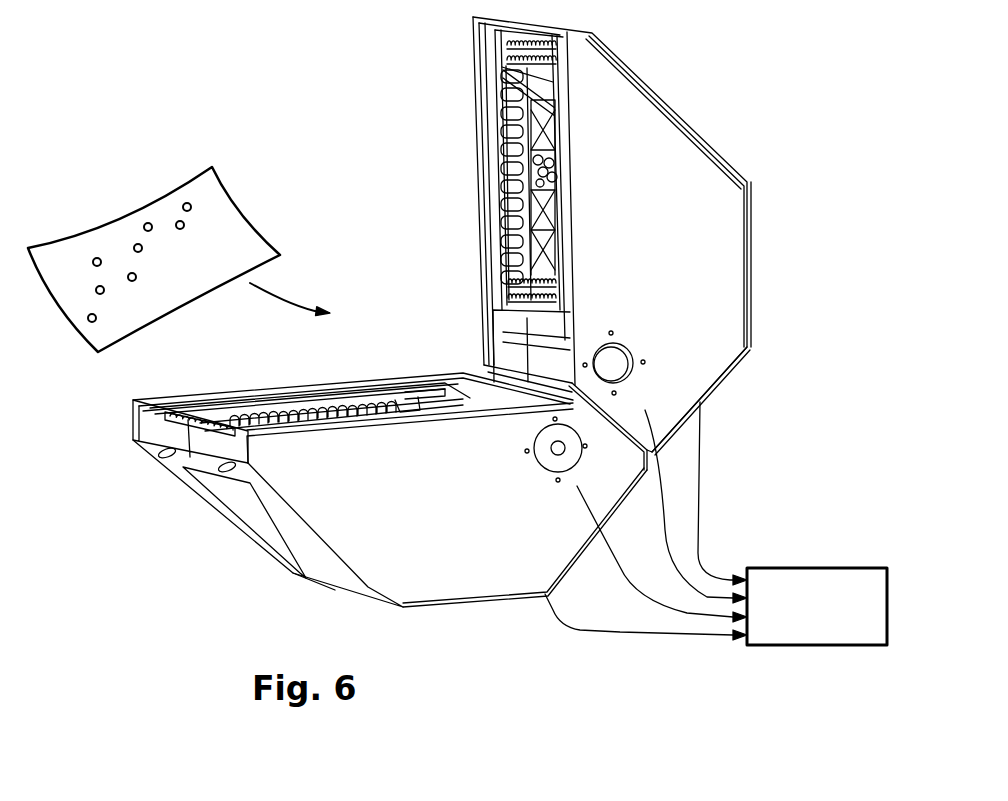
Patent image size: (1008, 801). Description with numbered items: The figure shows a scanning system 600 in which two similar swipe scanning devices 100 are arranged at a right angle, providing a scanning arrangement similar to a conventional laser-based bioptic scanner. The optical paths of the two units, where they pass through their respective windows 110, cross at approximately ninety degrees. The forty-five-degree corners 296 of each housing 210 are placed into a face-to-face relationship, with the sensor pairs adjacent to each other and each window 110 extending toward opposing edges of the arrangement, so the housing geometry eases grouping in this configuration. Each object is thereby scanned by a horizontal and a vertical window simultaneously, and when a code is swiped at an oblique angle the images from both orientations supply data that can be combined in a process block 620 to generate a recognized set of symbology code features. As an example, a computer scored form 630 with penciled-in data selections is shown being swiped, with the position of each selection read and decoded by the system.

The scanning system 600 is at (736, 65).
The scanning device 100 is at (727, 147).
The window 110 is at (487, 169).
The housing 210 is at (729, 292).
The 45-degree corner 296 is at (618, 422).
The computer scored form 630 is at (92, 248).
The process block 620 is at (793, 645).